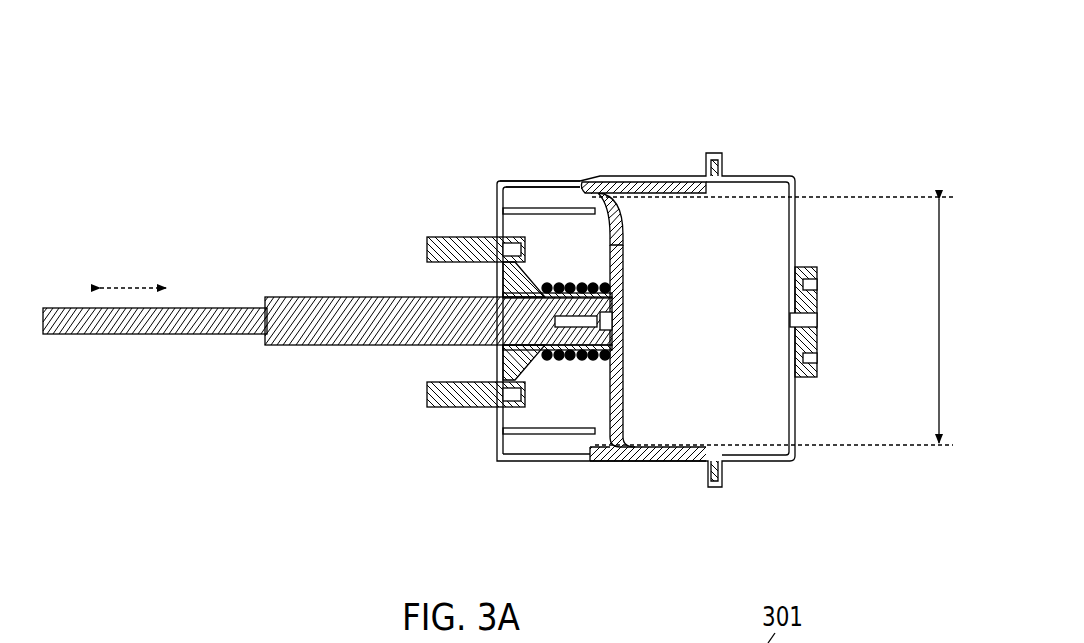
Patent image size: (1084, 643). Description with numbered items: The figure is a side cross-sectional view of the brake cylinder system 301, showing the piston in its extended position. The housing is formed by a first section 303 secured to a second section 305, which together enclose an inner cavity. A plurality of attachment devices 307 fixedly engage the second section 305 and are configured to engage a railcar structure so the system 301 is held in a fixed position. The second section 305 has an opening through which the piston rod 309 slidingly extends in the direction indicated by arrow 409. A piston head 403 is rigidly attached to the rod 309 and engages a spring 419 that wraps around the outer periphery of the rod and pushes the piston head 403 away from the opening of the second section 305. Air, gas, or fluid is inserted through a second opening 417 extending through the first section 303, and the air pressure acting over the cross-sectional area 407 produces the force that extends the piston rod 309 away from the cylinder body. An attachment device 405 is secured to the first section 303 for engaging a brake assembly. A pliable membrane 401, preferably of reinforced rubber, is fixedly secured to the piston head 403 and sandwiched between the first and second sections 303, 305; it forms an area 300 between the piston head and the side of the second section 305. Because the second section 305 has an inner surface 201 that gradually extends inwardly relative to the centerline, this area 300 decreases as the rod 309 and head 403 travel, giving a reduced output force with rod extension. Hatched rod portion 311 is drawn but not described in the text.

The inner surface 201 is at (547, 180).
The area 300 is at (628, 204).
The brake cylinder system 301 is at (736, 79).
The first section 303 is at (760, 175).
The second section 305 is at (603, 185).
The attachment devices 307 is at (472, 237).
The piston rod 309 is at (197, 308).
The piston rod 311 is at (475, 347).
The pliable membrane 401 is at (580, 457).
The piston head 403 is at (550, 432).
The attachment device 405 is at (822, 368).
The cross-sectional area 407 is at (940, 335).
The arrow 409 is at (130, 285).
The second opening 417 is at (823, 317).
The spring 419 is at (568, 283).